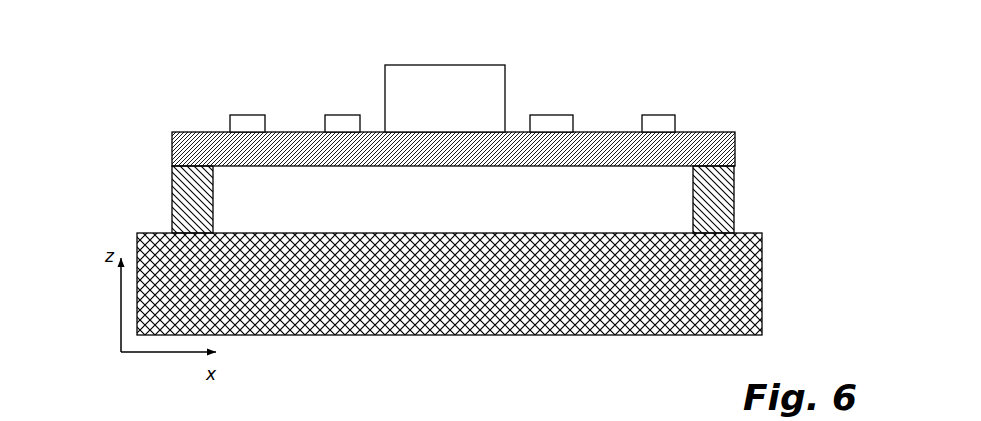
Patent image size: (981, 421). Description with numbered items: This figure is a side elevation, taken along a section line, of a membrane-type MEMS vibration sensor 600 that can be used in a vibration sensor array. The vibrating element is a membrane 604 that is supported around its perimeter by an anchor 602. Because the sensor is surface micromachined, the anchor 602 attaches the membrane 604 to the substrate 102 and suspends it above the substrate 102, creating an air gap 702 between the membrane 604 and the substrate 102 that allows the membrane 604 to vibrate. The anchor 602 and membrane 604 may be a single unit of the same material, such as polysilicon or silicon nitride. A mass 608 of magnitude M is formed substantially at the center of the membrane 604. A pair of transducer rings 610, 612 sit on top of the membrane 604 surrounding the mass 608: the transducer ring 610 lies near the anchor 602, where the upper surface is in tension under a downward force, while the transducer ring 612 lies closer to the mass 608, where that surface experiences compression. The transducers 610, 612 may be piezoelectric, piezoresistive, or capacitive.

The MEMS vibration sensor 600 is at (750, 105).
The substrate 102 is at (449, 285).
The anchor 602 is at (172, 190).
The membrane 604 is at (453, 149).
The mass 608 is at (445, 98).
The transducer ring 610 is at (248, 113).
The transducer ring 612 is at (329, 113).
The air gap 702 is at (453, 199).